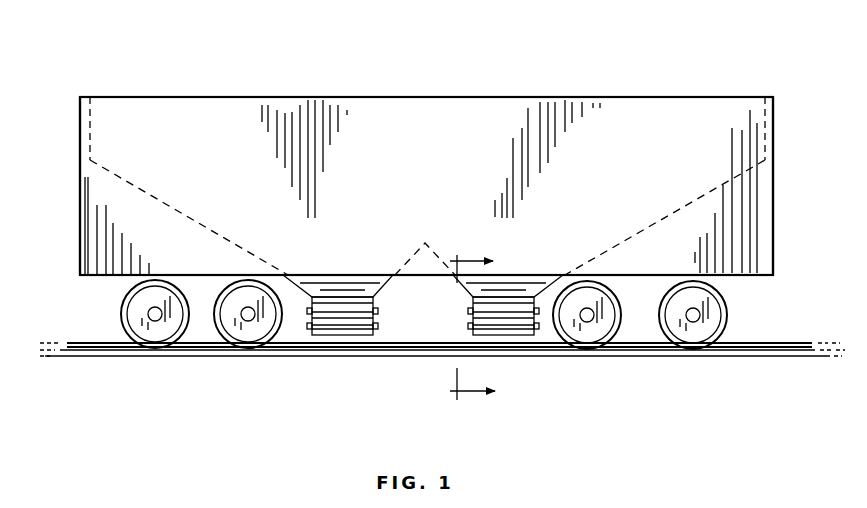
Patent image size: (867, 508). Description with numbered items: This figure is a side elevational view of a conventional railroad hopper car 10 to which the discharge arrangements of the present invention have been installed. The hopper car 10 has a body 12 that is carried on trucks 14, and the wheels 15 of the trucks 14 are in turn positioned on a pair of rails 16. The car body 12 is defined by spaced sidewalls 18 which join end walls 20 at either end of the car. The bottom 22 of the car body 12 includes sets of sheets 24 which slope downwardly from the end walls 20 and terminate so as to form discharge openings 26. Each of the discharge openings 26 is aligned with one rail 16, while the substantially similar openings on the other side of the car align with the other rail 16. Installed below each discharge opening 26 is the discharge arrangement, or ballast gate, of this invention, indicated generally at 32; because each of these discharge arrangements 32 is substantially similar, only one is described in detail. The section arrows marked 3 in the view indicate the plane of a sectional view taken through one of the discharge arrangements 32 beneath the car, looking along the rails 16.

The hopper car 10 is at (703, 88).
The body 12 is at (120, 135).
The trucks 14 is at (120, 308).
The wheels 15 is at (217, 330).
The rails 16 is at (785, 342).
The sidewalls 18 is at (484, 166).
The end walls 20 is at (80, 193).
The bottom 22 is at (105, 277).
The sheets 24 is at (205, 227).
The discharge openings 26 is at (347, 292).
The discharge arrangement 32 is at (450, 327).
The section line 3- 3 is at (472, 327).